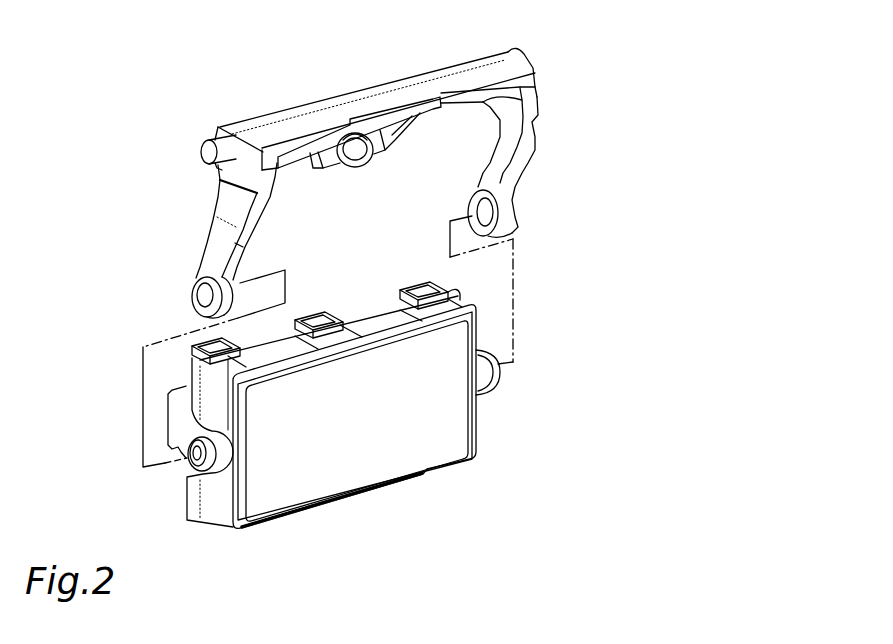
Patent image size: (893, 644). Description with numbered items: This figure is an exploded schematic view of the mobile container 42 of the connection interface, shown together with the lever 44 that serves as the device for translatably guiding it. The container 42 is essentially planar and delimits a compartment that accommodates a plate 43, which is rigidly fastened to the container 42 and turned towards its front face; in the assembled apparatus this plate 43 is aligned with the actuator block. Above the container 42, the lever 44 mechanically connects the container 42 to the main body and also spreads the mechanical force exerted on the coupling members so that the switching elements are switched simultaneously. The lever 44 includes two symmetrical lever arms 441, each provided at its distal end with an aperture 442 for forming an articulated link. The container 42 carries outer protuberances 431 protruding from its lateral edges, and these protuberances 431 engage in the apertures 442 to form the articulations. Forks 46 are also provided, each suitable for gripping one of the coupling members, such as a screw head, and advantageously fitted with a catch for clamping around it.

The lever 44 is at (375, 167).
The lever arms 441 is at (222, 204).
The apertures 442 is at (190, 285).
The mobile container 42 is at (190, 372).
The plate 43 is at (412, 427).
The outer protuberances 431 is at (215, 455).
The forks 46 is at (175, 438).